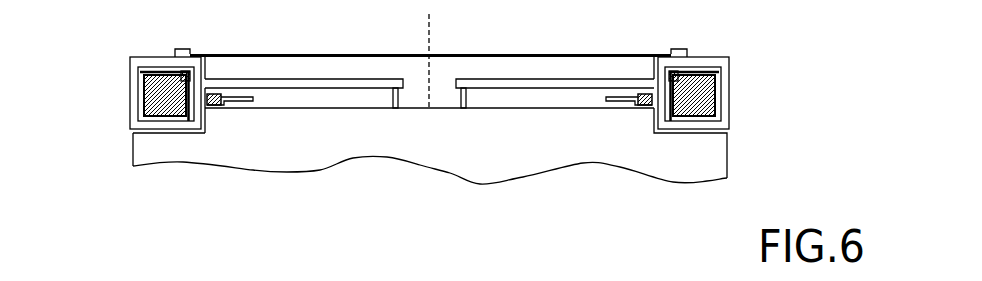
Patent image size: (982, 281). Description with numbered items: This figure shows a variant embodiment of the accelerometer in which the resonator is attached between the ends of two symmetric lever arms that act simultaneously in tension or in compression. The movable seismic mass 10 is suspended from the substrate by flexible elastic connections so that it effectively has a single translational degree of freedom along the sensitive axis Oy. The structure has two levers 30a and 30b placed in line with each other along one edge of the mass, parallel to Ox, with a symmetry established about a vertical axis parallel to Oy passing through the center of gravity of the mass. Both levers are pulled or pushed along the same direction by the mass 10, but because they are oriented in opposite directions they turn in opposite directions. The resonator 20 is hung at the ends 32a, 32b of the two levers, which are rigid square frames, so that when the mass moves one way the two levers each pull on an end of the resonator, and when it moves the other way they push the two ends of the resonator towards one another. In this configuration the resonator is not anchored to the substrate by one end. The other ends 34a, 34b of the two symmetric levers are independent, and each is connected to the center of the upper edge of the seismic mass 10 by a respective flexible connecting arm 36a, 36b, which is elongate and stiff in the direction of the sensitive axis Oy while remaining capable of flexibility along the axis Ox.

The movable seismic mass 10 is at (713, 162).
The plate / film member 20 is at (455, 54).
The lever 30a is at (285, 79).
The lever 30b is at (560, 79).
The end of lever 32a is at (155, 57).
The end of lever 32b is at (705, 58).
The end of lever 34a is at (403, 83).
The end of lever 34b is at (456, 83).
The flexible connecting arm 36a is at (386, 101).
The flexible connecting arm 36b is at (477, 105).